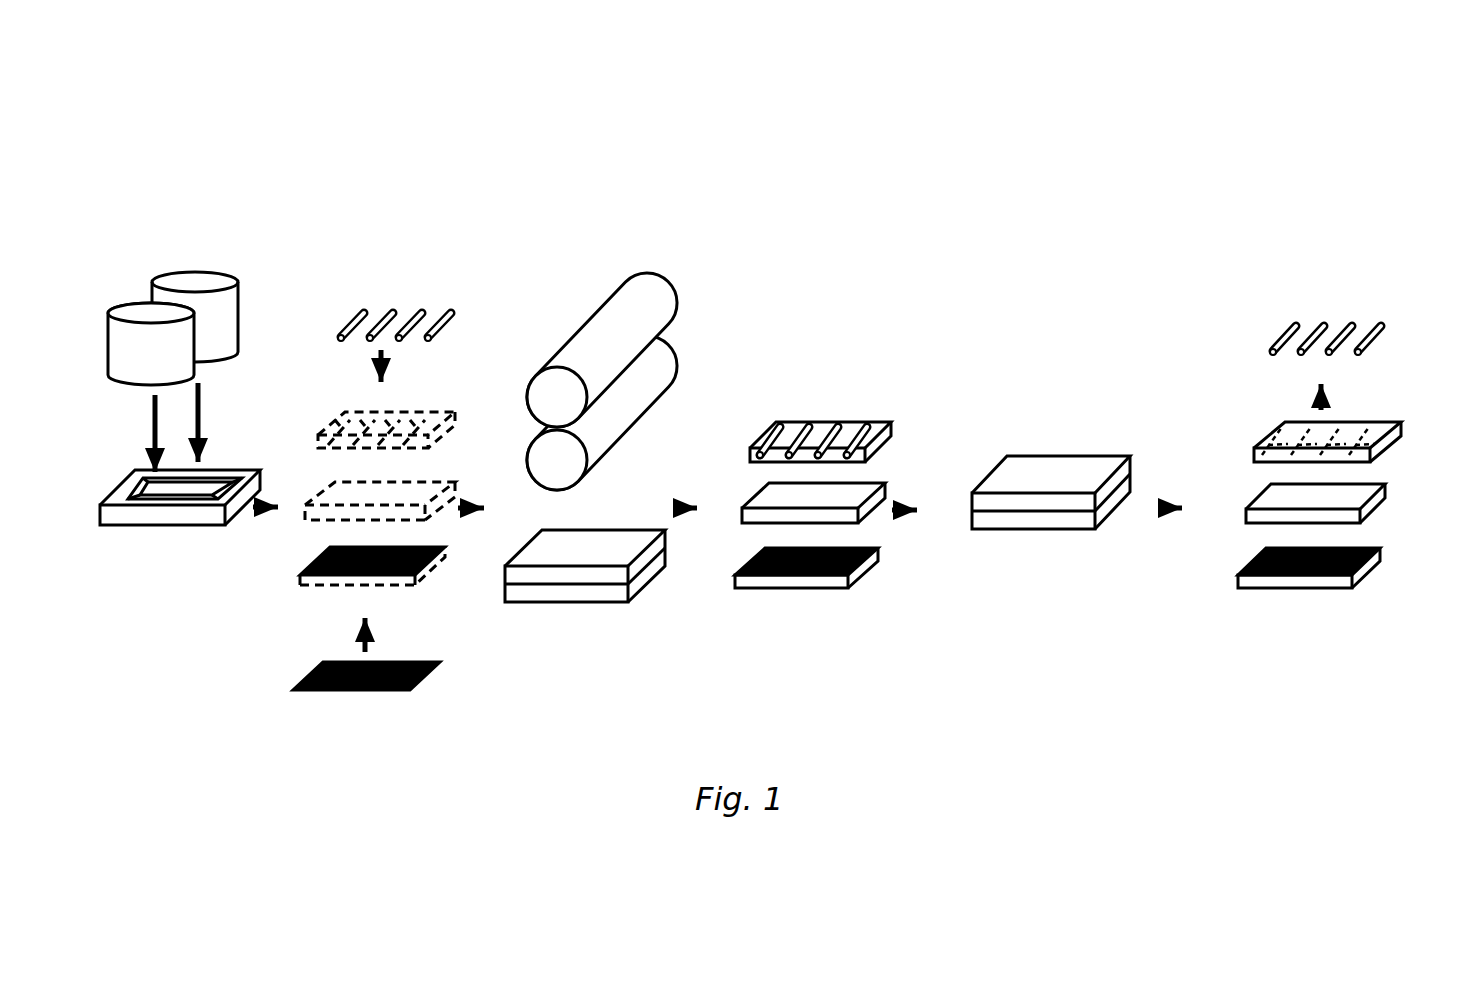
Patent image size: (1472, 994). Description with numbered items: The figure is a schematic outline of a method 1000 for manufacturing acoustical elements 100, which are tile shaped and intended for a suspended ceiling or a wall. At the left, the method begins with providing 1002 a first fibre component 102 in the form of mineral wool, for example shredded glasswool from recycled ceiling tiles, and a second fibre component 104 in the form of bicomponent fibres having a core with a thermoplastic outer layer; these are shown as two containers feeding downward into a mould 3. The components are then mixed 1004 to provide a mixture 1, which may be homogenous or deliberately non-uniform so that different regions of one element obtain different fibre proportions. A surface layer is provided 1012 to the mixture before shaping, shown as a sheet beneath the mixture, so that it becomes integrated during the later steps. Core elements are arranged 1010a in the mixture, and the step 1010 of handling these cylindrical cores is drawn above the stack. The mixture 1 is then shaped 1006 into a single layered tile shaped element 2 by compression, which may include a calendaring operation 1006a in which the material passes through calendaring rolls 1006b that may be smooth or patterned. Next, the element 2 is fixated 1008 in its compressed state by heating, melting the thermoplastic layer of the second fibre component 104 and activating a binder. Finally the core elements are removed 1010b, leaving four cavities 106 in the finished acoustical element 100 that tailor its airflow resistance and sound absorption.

The method 1000 is at (912, 100).
The providing 1002 is at (266, 237).
The mixing 1004 is at (240, 392).
The first fibre component 102 is at (113, 303).
The second fibre component 104 is at (188, 272).
The mould 3 is at (143, 538).
The mixture 1 is at (273, 572).
The provision of surface layer 1012 is at (271, 682).
The tube placement step 1010 is at (490, 243).
The arranging core elements 1010a is at (433, 368).
The shaping 1006 is at (691, 209).
The rollers 1006b is at (686, 337).
The calendaring operation 1006a is at (634, 623).
The single layered tile shaped element 2 is at (894, 600).
The fixating 1008 is at (1061, 409).
The removing core elements 1010b is at (1379, 280).
The cavity 106 is at (1282, 430).
The acoustical element 100 is at (1382, 620).